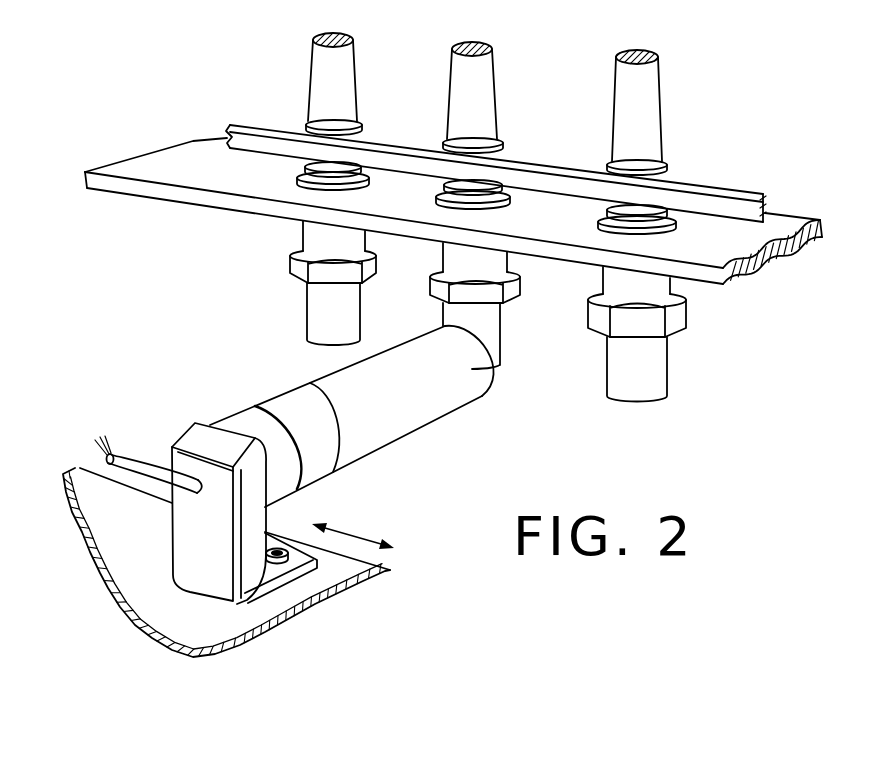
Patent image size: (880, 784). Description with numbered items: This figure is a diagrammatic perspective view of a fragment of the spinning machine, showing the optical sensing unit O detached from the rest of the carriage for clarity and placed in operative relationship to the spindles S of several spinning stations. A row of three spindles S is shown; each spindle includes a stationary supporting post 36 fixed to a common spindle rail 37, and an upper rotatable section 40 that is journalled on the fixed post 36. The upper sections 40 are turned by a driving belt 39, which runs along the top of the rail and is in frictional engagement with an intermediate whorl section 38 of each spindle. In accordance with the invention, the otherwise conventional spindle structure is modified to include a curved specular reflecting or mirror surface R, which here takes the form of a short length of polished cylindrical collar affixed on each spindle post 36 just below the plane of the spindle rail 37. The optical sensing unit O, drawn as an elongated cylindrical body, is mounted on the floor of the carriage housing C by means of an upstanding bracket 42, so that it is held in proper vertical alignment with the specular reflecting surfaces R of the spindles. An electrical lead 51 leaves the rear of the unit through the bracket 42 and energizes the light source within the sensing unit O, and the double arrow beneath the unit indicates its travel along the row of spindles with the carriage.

The stationary supporting post 36 is at (318, 305).
The spindle rail 37 is at (457, 211).
The intermediate whorl section 38 is at (306, 126).
The driving belt 39 is at (543, 181).
The upper rotatable section 40 is at (345, 103).
The upstanding bracket 42 is at (190, 548).
The electrical lead 51 is at (145, 476).
The spindle S is at (446, 72).
The optical sensing unit O is at (445, 432).
The specular reflecting surface R is at (486, 261).
The carriage housing C is at (194, 632).